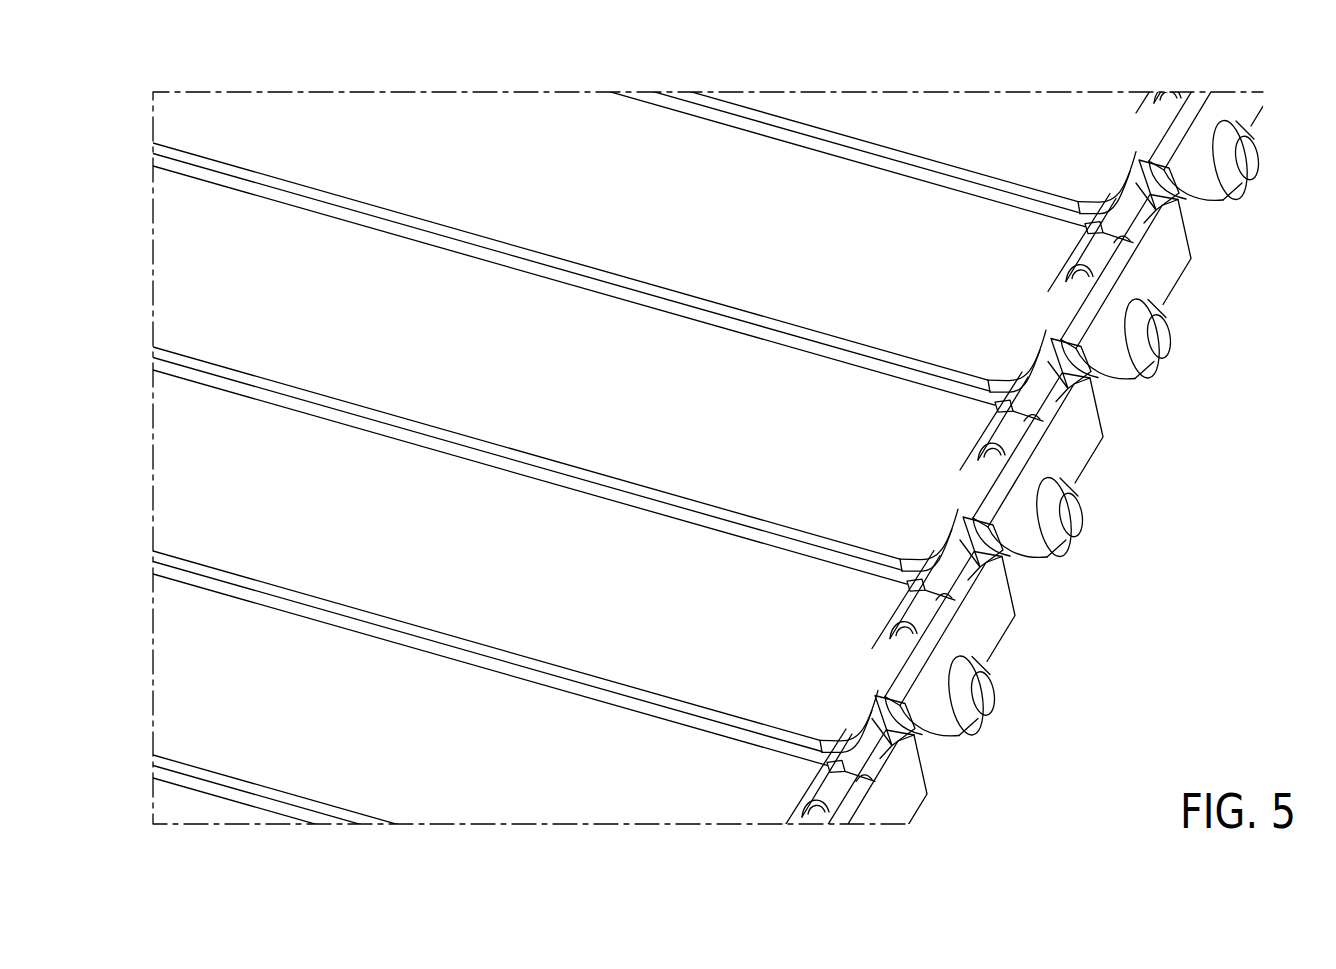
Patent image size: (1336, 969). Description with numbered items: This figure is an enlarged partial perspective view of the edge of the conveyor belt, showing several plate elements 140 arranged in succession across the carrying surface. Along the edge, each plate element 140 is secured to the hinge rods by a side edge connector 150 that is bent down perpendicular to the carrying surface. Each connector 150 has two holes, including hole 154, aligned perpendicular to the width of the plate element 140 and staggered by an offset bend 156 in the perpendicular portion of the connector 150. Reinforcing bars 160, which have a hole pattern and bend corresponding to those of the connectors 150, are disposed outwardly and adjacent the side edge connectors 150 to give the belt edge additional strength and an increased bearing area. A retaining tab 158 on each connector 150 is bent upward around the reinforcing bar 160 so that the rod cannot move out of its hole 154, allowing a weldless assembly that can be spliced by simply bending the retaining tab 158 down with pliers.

The plate element 140 is at (867, 228).
The side edge connector 150 is at (1043, 476).
The hole 154 is at (1170, 100).
The offset bend 156 is at (1107, 190).
The retaining tab 158 is at (985, 698).
The reinforcing bar 160 is at (1182, 250).